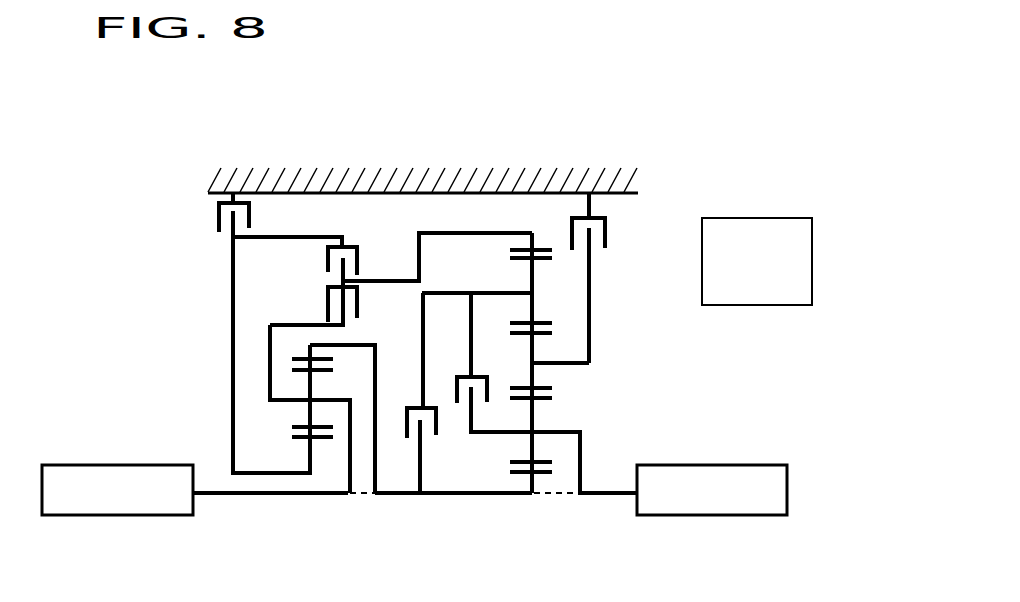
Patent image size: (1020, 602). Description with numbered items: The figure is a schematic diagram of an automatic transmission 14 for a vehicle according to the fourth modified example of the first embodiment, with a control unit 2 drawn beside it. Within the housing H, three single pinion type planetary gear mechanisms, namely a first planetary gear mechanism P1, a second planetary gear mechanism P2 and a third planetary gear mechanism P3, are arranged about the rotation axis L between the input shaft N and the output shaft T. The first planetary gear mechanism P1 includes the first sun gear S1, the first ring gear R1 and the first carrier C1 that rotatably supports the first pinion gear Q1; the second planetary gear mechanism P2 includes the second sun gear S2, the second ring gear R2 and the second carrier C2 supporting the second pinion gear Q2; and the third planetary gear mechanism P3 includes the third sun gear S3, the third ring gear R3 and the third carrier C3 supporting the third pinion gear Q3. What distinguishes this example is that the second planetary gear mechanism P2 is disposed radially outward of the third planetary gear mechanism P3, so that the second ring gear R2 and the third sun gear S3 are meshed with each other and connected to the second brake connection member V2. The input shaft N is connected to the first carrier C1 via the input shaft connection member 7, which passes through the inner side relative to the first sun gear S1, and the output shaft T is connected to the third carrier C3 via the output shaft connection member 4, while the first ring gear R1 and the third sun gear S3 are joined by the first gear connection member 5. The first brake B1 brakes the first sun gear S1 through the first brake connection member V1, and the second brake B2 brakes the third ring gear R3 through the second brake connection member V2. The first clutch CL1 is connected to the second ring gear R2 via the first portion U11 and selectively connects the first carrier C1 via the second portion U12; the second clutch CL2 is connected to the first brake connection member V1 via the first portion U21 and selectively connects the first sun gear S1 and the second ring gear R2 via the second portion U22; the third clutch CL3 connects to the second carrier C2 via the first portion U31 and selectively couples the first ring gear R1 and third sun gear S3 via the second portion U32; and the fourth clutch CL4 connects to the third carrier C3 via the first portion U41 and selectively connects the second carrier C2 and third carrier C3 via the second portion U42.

The automatic transmission 14 is at (638, 148).
The TM-ECU (transmission control unit) 2 is at (738, 218).
The output shaft connection member 4 is at (582, 470).
The first gear connection member 5 is at (412, 497).
The input shaft connection member 7 is at (350, 437).
The housing H is at (472, 178).
The input shaft N is at (142, 515).
The rotation axis L is at (245, 497).
The output shaft T is at (697, 517).
The first planetary gear mechanism P1 is at (324, 454).
The second planetary gear mechanism P2 is at (557, 222).
The third planetary gear mechanism P3 is at (565, 487).
The first ring gear R1 is at (292, 358).
The first carrier C1 is at (309, 400).
The first pinion gear Q1 is at (309, 419).
The first sun gear S1 is at (309, 453).
The second ring gear R2 is at (537, 248).
The second carrier C2 is at (530, 292).
The second pinion gear Q2 is at (534, 278).
The second sun gear S2 is at (534, 342).
The third ring gear R3 is at (545, 386).
The third carrier C3 is at (551, 427).
The third pinion gear Q3 is at (534, 450).
The third sun gear S3 is at (532, 478).
The first brake B1 is at (272, 225).
The second brake B2 is at (620, 235).
The first brake connection member V1 is at (232, 310).
The second brake connection member V2 is at (590, 268).
The first clutch CL1 is at (377, 309).
The second clutch CL2 is at (400, 253).
The third clutch CL3 is at (447, 430).
The fourth clutch CL4 is at (503, 366).
The first portion of first clutch connection member U11 is at (343, 281).
The second portion of first clutch connection member U12 is at (335, 324).
The first portion of second clutch connection member U21 is at (340, 219).
The second portion of second clutch connection member U22 is at (419, 270).
The first portion of third clutch connection member U31 is at (425, 386).
The second portion of third clutch connection member U32 is at (421, 458).
The first portion of fourth clutch connection member U41 is at (492, 328).
The second portion of fourth clutch connection member U42 is at (472, 418).